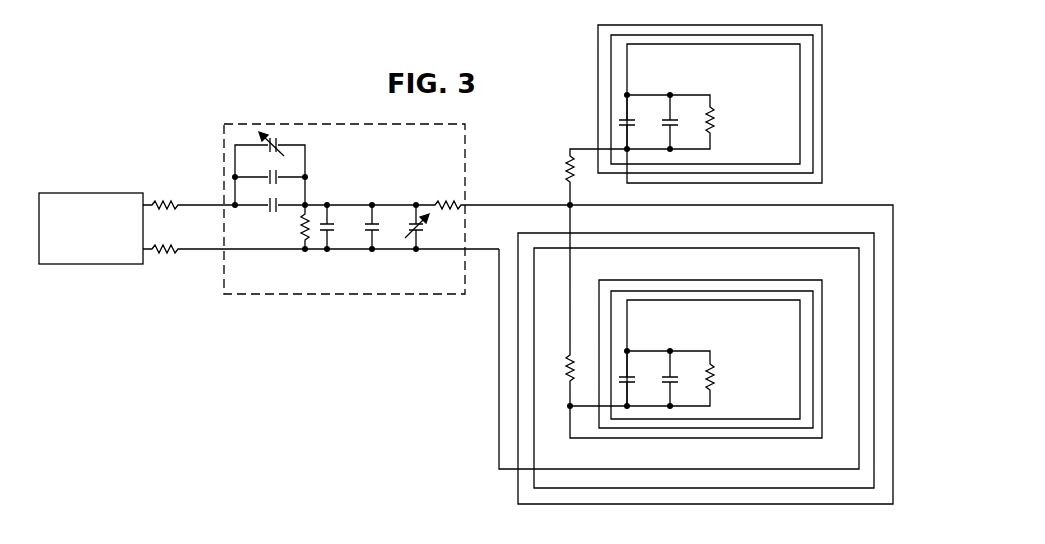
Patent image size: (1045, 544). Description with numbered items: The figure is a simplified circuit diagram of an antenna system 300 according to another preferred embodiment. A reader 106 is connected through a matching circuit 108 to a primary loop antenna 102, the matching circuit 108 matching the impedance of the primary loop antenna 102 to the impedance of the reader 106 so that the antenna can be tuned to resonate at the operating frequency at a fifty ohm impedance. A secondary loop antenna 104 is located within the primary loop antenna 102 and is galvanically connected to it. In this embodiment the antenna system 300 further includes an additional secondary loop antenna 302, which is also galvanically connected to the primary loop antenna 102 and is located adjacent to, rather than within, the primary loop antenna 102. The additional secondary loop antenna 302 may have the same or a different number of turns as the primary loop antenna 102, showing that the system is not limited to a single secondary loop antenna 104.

The antenna system 300 is at (179, 107).
The reader 106 is at (98, 264).
The matching circuit 108 is at (297, 294).
The primary loop antenna 102 is at (498, 357).
The secondary loop antenna 104 is at (822, 380).
The additional secondary loop antenna 302 is at (822, 112).